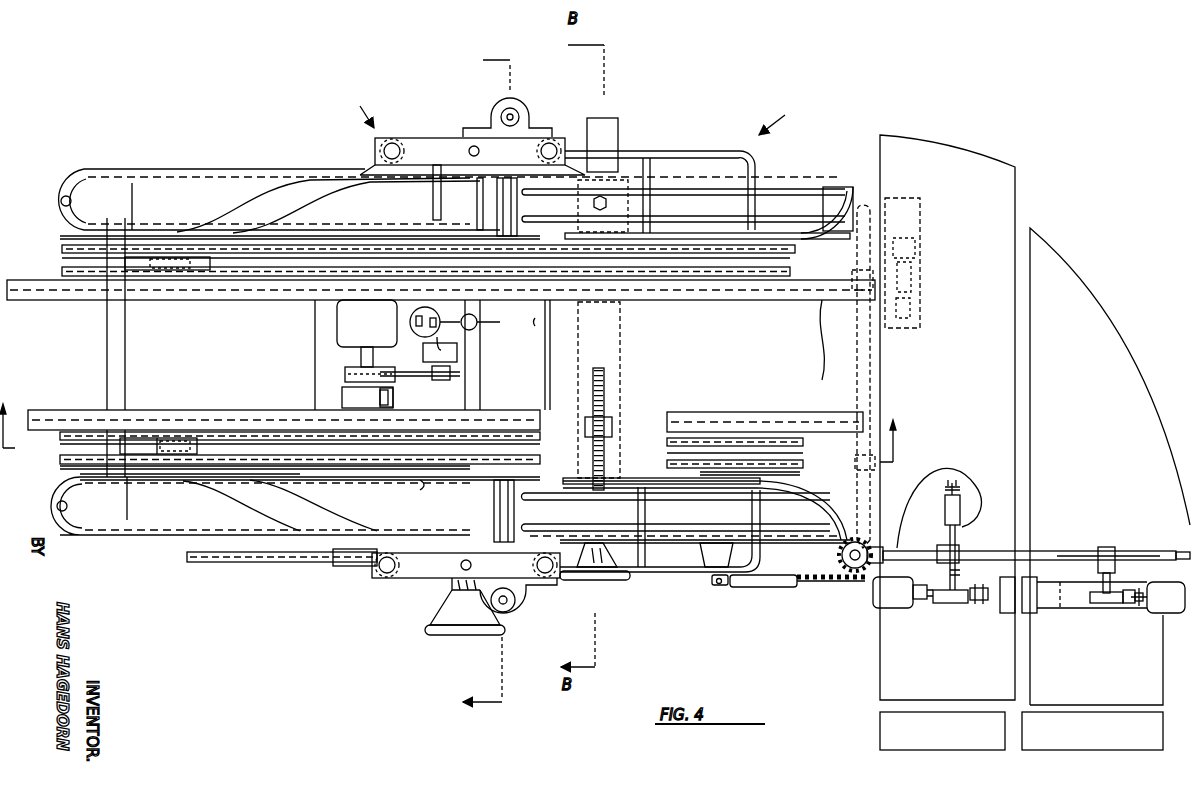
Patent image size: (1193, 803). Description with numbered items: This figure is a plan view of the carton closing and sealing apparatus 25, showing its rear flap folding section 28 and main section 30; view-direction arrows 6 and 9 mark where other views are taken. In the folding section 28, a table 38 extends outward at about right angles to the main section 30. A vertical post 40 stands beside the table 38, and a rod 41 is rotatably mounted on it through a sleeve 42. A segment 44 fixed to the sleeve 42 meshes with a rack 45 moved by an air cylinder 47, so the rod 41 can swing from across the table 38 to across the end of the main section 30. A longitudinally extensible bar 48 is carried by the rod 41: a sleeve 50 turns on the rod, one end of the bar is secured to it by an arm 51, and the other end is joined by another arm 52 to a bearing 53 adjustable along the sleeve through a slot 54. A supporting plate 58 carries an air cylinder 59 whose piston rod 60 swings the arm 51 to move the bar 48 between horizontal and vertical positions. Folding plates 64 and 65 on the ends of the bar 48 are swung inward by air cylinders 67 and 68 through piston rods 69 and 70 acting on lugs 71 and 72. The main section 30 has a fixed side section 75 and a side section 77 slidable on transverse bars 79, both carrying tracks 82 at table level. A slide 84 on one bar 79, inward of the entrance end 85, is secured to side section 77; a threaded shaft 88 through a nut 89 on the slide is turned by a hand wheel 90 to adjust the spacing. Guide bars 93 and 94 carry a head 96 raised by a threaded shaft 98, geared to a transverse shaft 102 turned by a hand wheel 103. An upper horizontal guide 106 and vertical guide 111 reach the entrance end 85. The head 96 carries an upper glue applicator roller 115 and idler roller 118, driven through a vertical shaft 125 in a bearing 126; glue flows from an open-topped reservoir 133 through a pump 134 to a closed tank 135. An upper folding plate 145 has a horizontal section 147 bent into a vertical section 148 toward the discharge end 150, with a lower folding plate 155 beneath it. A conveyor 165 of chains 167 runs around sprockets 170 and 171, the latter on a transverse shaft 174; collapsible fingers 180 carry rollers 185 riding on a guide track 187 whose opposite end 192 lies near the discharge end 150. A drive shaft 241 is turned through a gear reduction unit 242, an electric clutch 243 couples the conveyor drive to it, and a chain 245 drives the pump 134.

The section line 6- 6 is at (455, 421).
The section line 9- 9 is at (486, 381).
The apparatus 25 is at (780, 117).
The rear flap folding section 28 is at (1048, 548).
The main section 30 is at (355, 109).
The table 38 is at (1089, 435).
The vertical post 40 is at (870, 548).
The rod 41 is at (870, 210).
The sleeve 42 is at (840, 554).
The segment 44 is at (850, 582).
The rack 45 is at (820, 585).
The air cylinder 47 is at (778, 587).
The longitudinally extensible bar 48 is at (918, 255).
The sleeve 50 is at (1000, 550).
The arm 51 is at (935, 569).
The arm 52 is at (1095, 572).
The bearing 53 is at (1112, 547).
The slot 54 is at (1162, 552).
The supporting plate 58 is at (925, 490).
The air cylinder 59 is at (960, 505).
The piston rod 60 is at (947, 545).
The folding plate 64 is at (885, 608).
The folding plate 65 is at (922, 212).
The air cylinder 67 is at (948, 604).
The air cylinder 68 is at (1104, 604).
The piston rod 69 is at (920, 603).
The piston rod 70 is at (1128, 604).
The lug 71 is at (912, 594).
The lug 72 is at (1146, 598).
The side section 75 is at (608, 590).
The side section 77 is at (664, 148).
The transverse bars 79 is at (619, 128).
The tracks 82 is at (822, 382).
The slide 84 is at (622, 346).
The entrance end 85 is at (870, 363).
The threaded shaft 88 is at (606, 378).
The nut 89 is at (612, 420).
The hand wheel 90 is at (632, 580).
The guide bar 93 is at (382, 575).
The guide bar 94 is at (552, 575).
The head 96 is at (428, 140).
The threaded shaft 98 is at (475, 146).
The transverse shaft 102 is at (462, 398).
The hand wheel 103 is at (467, 636).
The upper horizontal guide 106 is at (800, 189).
The vertical guide 111 is at (812, 235).
The upper glue applicator roller 115 is at (498, 222).
The idler roller 118 is at (498, 195).
The vertical shaft 125 is at (512, 612).
The bearing 126 is at (516, 607).
The open-topped reservoir 133 is at (540, 322).
The pump 134 is at (457, 347).
The closed tank 135 is at (410, 318).
The upper folding plate 145 is at (383, 224).
The horizontal section 147 is at (437, 479).
The vertical section 148 is at (147, 478).
The discharge end 150 is at (78, 358).
The lower folding plate 155 is at (306, 180).
The conveyor 165 is at (60, 262).
The chain 167 is at (264, 262).
The sprocket 170 is at (765, 435).
The sprocket 171 is at (710, 262).
The transverse shaft 174 is at (125, 370).
The collapsible finger 180 is at (178, 436).
The roller 185 is at (200, 444).
The guide track 187 is at (770, 438).
The opposite end 192 is at (107, 432).
The drive shaft 241 is at (361, 357).
The gear reduction unit 242 is at (337, 325).
The electric clutch 243 is at (342, 395).
The chain 245 is at (345, 376).